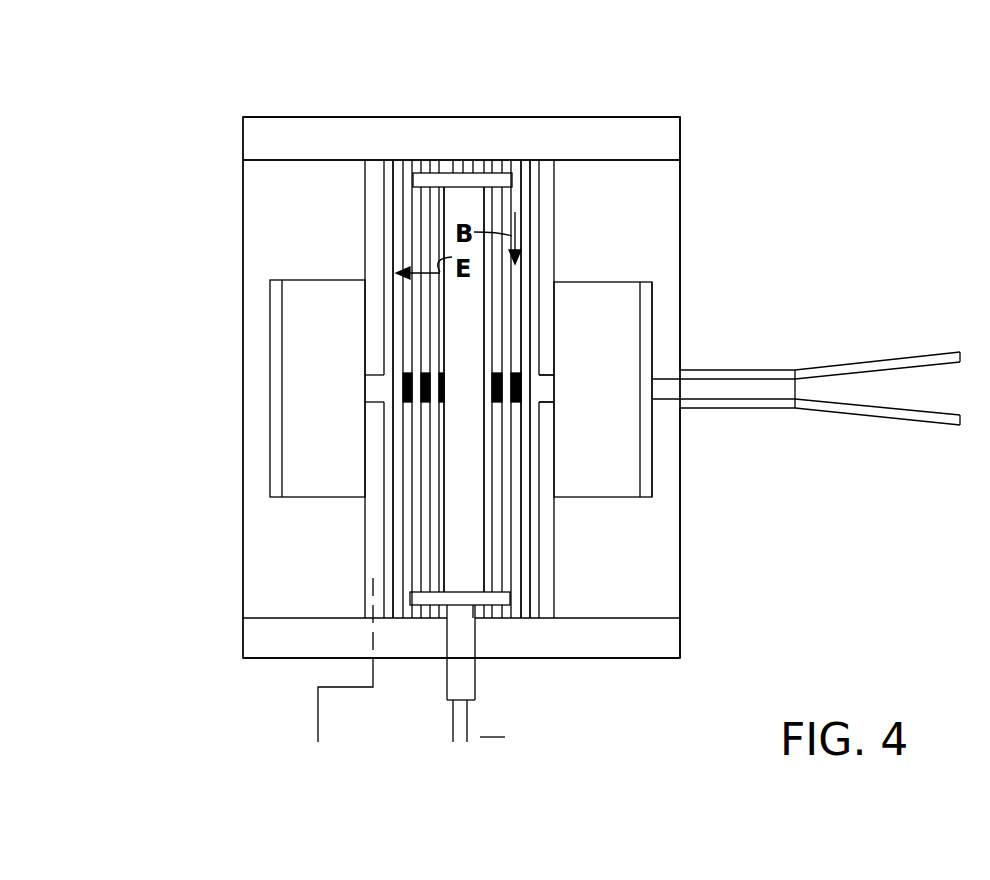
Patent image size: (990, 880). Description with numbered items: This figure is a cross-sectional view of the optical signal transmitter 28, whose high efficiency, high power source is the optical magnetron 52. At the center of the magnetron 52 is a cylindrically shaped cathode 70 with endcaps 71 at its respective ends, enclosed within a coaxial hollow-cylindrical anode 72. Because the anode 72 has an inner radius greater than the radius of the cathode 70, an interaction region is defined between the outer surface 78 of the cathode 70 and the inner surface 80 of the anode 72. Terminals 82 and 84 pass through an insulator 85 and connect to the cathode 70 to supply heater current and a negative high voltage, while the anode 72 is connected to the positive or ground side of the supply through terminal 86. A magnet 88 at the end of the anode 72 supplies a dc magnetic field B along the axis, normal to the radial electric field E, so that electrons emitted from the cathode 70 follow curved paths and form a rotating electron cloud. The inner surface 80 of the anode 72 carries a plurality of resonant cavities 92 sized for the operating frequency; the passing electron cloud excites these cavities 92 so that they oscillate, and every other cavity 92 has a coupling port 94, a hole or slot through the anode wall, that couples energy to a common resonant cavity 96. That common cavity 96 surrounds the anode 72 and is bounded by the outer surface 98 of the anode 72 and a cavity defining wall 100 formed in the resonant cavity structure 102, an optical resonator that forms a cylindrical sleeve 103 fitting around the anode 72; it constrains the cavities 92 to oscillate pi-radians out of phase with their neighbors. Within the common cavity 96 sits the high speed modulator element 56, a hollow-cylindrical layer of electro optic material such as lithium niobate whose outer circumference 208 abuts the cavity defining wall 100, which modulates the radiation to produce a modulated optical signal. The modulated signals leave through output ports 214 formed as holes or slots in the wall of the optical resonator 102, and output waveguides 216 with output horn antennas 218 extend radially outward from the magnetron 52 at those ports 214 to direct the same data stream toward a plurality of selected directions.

The optical signal transmitter 28 is at (158, 88).
The optical magnetron 52 is at (268, 112).
The high speed modulator element 56 is at (266, 448).
The cathode 70 is at (460, 203).
The endcaps 71 is at (475, 180).
The anode 72 is at (375, 172).
The outer surface of the cathode 78 is at (487, 205).
The inner surface of the anode 80 is at (530, 558).
The terminal 82 is at (453, 727).
The terminal 84 is at (467, 727).
The insulator 85 is at (474, 680).
The terminal 86 is at (320, 725).
The magnet 88 is at (653, 137).
The resonant cavities 92 is at (393, 497).
The coupling port 94 is at (388, 400).
The common resonant cavity 96 is at (600, 295).
The outer surface of the anode 98 is at (556, 415).
The cavity defining wall 100 is at (650, 448).
The resonant cavity structure 102 is at (683, 622).
The cylindrical sleeve 103 is at (555, 180).
The outer circumference of the modulator element 208 is at (653, 313).
The output ports 214 is at (665, 380).
The output waveguides 216 is at (760, 370).
The output antennas 218 is at (880, 355).